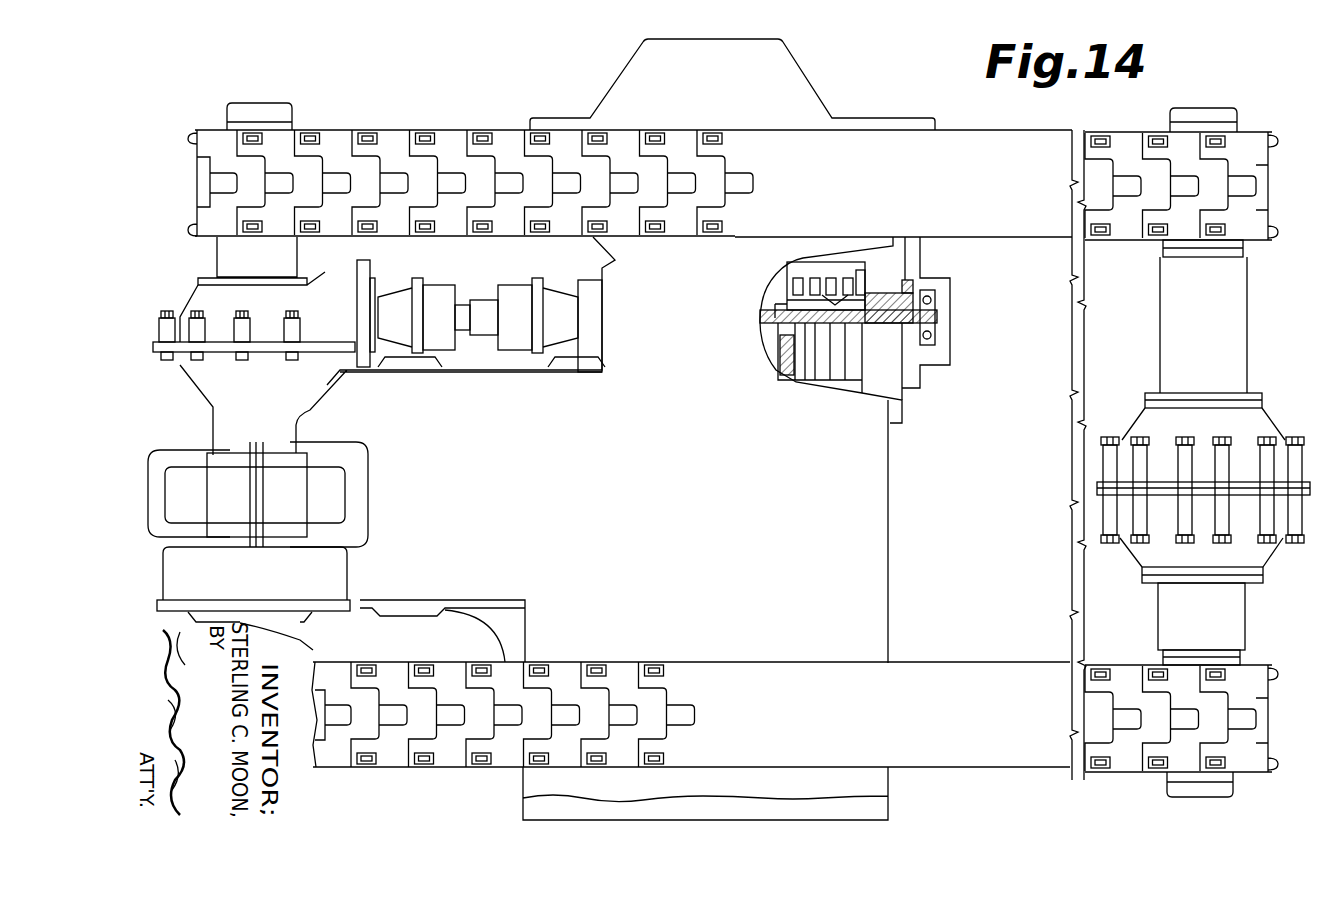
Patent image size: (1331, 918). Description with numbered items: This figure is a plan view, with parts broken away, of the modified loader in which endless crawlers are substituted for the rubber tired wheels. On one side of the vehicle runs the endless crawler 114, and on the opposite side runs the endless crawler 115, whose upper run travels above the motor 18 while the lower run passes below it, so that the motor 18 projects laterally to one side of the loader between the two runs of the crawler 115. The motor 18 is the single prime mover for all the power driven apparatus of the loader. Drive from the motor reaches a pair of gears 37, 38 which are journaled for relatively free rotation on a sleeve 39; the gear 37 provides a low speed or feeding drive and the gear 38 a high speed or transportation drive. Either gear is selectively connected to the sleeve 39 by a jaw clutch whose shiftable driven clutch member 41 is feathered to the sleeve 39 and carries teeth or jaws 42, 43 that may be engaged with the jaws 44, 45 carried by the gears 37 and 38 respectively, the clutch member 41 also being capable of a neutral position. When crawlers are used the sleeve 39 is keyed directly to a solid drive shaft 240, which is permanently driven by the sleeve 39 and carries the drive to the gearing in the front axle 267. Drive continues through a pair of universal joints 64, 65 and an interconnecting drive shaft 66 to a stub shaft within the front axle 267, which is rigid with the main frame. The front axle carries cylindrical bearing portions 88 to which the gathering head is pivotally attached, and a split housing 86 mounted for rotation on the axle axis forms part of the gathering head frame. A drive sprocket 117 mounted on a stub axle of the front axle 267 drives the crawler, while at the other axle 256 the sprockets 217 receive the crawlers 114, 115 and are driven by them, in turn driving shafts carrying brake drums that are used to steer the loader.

The drive sprocket 117 is at (230, 128).
The endless crawler 114 is at (1001, 145).
The endless crawler 115 is at (977, 752).
The electric motor 18 is at (518, 782).
The cylindrical bearing portions 88 is at (261, 261).
The front axle 267 is at (232, 403).
The drive shaft 66 is at (457, 302).
The universal joint 65 is at (416, 315).
The universal joint 64 is at (538, 315).
The split housing 86 is at (258, 546).
The sprockets 217 is at (1234, 130).
The rear axle 256 is at (1230, 312).
The solid drive shaft 240 is at (763, 311).
The gear 37 is at (852, 378).
The gear 38 is at (802, 373).
The sleeve 39 is at (820, 290).
The jaw clutch member 41 is at (830, 285).
The jaws 42 is at (848, 290).
The jaws 43 is at (805, 290).
The jaws 44 is at (872, 285).
The jaws 45 is at (793, 275).